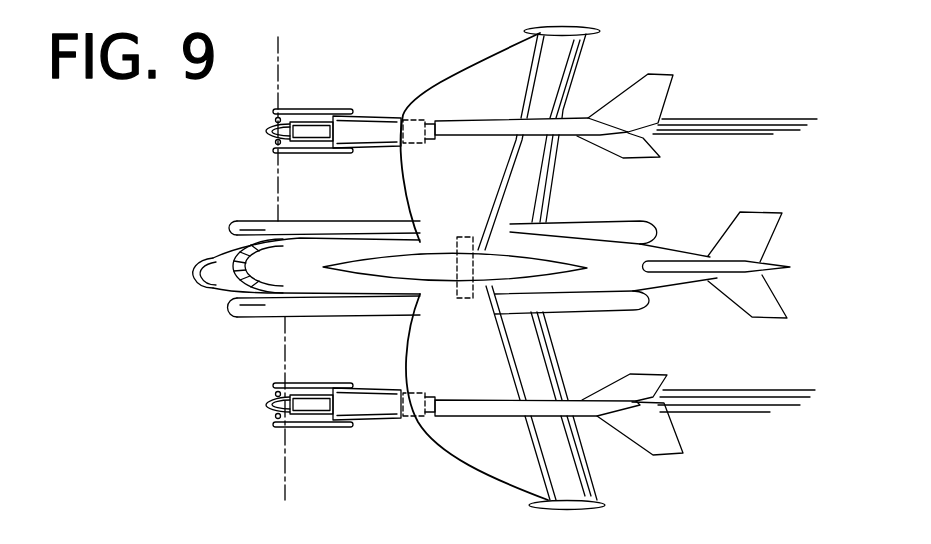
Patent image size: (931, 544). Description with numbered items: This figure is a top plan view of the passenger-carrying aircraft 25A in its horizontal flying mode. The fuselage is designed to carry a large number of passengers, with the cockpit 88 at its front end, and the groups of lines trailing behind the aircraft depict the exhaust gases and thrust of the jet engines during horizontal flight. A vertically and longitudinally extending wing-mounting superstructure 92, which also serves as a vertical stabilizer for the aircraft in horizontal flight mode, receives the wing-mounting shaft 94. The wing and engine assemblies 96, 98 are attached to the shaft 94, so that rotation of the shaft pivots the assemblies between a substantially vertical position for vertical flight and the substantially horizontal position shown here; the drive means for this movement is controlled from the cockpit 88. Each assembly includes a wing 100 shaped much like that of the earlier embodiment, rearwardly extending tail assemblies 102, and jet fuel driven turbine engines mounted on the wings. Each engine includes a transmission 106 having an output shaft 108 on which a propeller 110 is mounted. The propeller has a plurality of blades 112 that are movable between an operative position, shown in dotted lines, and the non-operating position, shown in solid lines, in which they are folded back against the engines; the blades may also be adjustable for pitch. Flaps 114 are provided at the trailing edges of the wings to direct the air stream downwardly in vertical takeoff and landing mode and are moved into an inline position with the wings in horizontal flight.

The aircraft 25A is at (541, 91).
The cockpit 88 is at (218, 256).
The wing-mounting superstructure 92 is at (475, 248).
The wing-mounting shaft 94 is at (484, 244).
The wing and engine assembly 96 is at (487, 459).
The wing and engine assembly 98 is at (462, 84).
The wing 100 is at (512, 395).
The tail assembly 102 is at (664, 374).
The transmission 106 is at (322, 409).
The output shaft 108 is at (296, 395).
The propeller 110 is at (277, 418).
The blades 112 is at (305, 150).
The flaps 114 is at (563, 63).